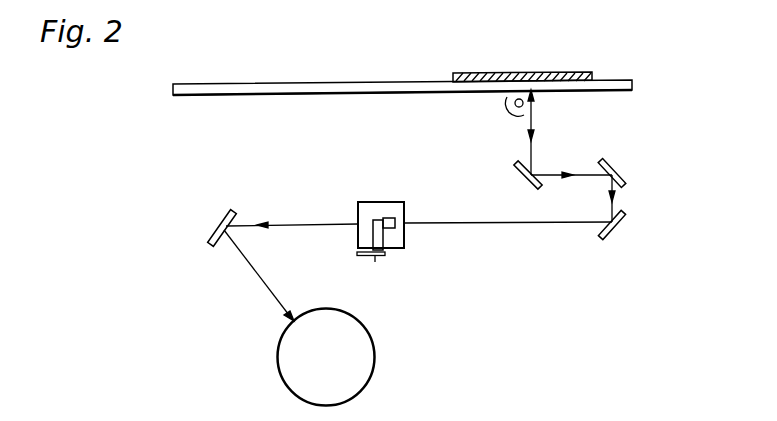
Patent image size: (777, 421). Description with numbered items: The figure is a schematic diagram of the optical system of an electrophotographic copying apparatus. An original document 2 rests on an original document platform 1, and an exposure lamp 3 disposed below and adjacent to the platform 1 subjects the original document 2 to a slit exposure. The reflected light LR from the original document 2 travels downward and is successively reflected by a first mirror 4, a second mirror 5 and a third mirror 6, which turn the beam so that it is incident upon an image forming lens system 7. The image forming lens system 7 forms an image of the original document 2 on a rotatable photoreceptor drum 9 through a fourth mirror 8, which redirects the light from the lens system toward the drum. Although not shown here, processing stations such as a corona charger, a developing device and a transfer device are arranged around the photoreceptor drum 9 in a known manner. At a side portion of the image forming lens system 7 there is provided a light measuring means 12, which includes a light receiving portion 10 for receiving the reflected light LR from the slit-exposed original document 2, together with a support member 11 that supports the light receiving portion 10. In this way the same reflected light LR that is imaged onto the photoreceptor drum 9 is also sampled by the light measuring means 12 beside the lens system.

The original document platform 1 is at (322, 84).
The original document 2 is at (518, 72).
The exposure lamp 3 is at (516, 115).
The first mirror 4 is at (520, 171).
The second mirror 5 is at (618, 168).
The third mirror 6 is at (620, 228).
The image forming lens system 7 is at (380, 202).
The fourth mirror 8 is at (218, 224).
The photoreceptor drum 9 is at (374, 341).
The light receiving portion 10 is at (393, 218).
The support member 11 is at (373, 221).
The light measuring means 12 is at (393, 232).
The reflected light LR is at (532, 141).